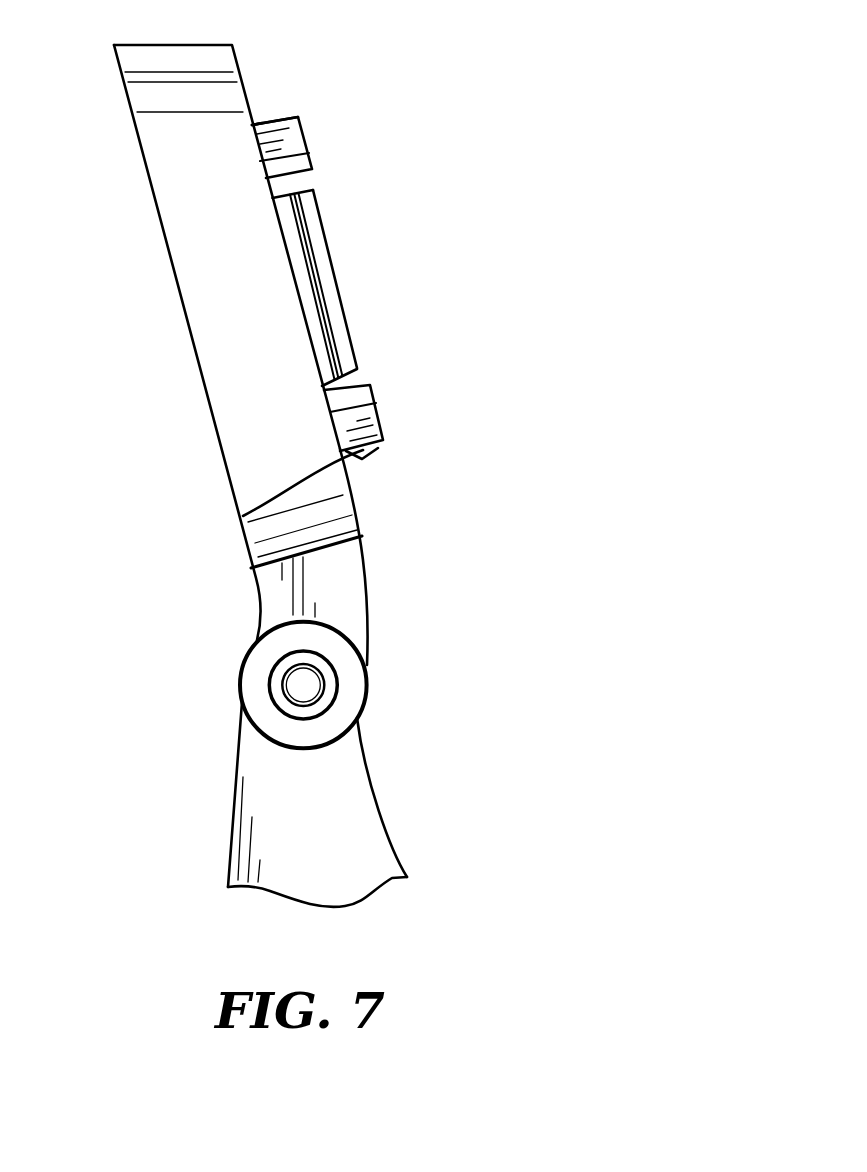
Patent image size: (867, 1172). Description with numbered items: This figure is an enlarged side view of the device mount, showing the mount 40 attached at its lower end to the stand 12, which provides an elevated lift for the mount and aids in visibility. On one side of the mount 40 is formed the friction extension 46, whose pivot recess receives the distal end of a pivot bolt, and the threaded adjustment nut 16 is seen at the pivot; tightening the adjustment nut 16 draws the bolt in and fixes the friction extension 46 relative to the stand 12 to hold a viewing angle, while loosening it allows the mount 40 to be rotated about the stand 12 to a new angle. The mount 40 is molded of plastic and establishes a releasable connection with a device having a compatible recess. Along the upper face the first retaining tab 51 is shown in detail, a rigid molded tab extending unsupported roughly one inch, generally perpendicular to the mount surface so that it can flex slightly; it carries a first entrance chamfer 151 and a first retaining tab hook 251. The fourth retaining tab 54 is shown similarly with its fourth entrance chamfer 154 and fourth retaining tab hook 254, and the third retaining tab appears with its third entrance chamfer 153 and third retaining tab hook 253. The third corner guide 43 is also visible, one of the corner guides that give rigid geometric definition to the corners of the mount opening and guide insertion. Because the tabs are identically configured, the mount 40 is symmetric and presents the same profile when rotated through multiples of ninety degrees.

The stand 12 is at (345, 798).
The adjustment nut 16 is at (268, 683).
The mount 40 is at (193, 293).
The third corner guide 43 is at (366, 407).
The friction extension 46 is at (347, 592).
The first retaining tab 51 is at (257, 122).
The fourth retaining tab 54 is at (308, 302).
The first entrance chamfer 151 is at (274, 118).
The third entrance chamfer 153 is at (363, 450).
The fourth entrance chamfer 154 is at (327, 282).
The first retaining tab hook 251 is at (263, 122).
The third retaining tab hook 253 is at (243, 516).
The fourth retaining tab hook 254 is at (330, 335).